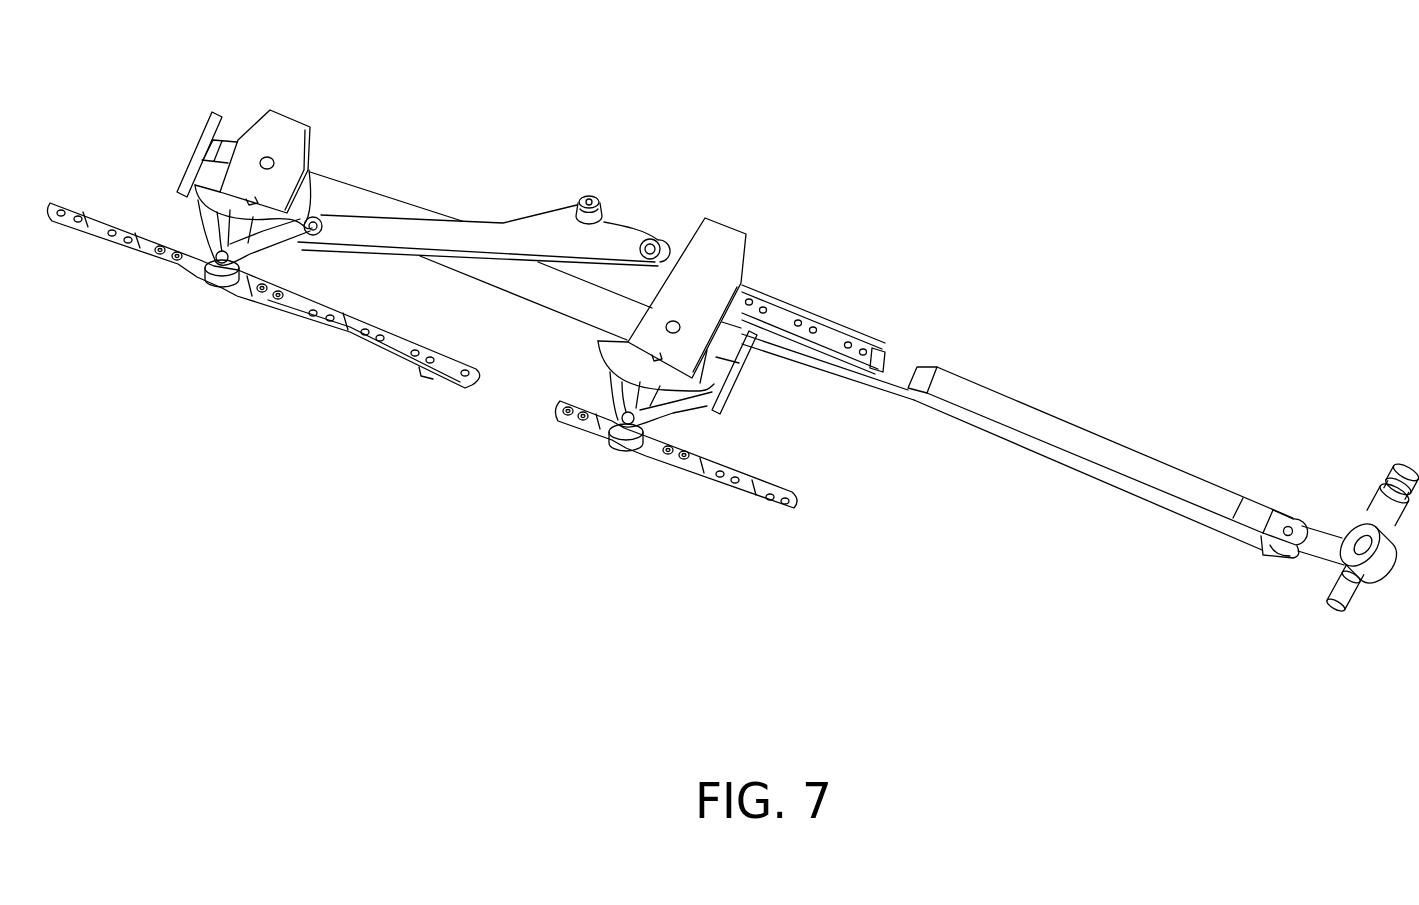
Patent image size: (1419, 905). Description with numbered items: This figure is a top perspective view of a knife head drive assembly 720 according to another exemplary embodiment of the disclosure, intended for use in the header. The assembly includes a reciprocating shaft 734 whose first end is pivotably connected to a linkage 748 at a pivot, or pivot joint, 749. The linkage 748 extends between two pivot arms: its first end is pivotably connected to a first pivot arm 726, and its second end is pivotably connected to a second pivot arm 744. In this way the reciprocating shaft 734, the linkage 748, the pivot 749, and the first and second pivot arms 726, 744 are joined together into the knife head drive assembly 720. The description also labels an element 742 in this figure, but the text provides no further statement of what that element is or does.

The knife head drive assembly 720 is at (733, 322).
The second pivot arm 744 is at (288, 117).
The servo arm 742 is at (270, 305).
The linkage 748 is at (462, 222).
The pivot 749 is at (592, 196).
The first pivot arm 726 is at (747, 256).
The reciprocating shaft 734 is at (1068, 417).